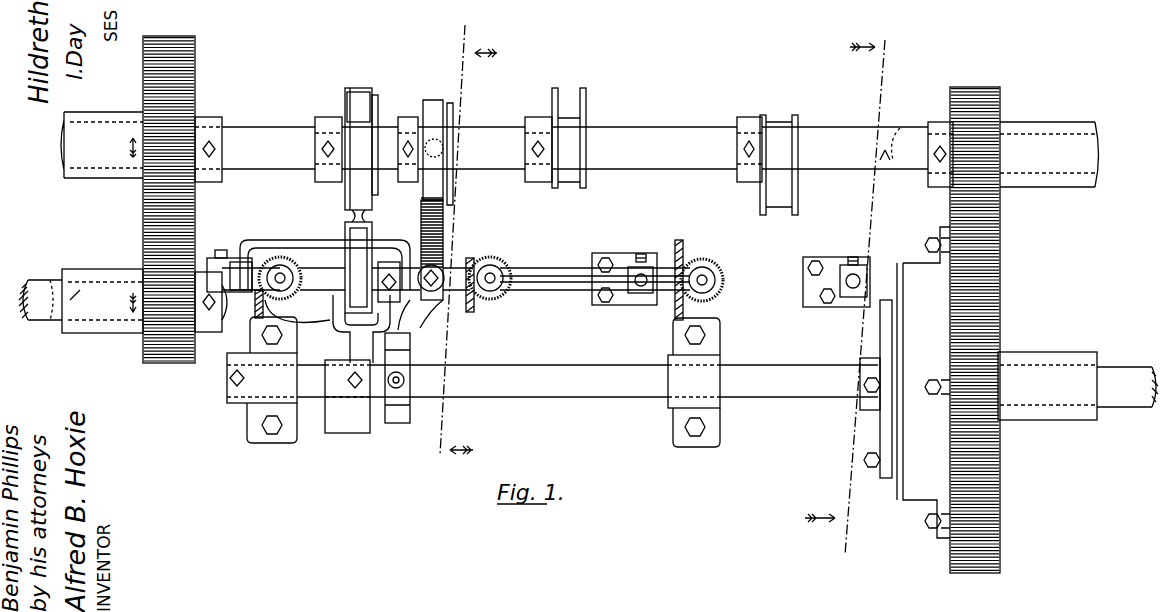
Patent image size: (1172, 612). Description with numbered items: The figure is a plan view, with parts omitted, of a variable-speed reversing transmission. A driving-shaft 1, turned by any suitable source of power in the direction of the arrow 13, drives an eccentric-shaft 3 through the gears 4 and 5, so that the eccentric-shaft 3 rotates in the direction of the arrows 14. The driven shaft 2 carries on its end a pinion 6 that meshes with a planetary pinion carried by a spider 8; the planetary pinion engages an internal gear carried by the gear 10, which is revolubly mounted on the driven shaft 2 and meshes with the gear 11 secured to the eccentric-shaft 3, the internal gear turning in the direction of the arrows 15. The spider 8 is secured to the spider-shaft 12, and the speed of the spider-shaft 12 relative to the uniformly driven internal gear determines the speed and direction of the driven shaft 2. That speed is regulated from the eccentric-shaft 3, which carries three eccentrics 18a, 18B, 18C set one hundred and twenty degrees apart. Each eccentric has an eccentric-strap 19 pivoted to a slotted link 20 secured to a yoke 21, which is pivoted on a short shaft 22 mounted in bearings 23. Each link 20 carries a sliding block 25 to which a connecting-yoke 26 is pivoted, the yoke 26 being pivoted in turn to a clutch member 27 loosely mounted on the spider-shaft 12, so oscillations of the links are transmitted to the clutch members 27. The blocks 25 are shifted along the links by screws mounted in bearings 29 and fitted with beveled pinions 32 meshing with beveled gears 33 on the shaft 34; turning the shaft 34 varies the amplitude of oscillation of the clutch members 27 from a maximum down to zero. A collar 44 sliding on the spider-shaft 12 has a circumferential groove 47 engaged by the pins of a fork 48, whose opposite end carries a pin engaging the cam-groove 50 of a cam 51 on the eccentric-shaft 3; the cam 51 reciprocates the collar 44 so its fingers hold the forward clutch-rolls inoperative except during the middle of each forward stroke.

The driving-shaft 1 is at (48, 318).
The driven shaft 2 is at (1114, 386).
The eccentric-shaft 3 is at (244, 134).
The gear 4 is at (155, 272).
The gear 5 is at (186, 92).
The pinion 6 is at (848, 298).
The spider 8 is at (885, 436).
The gear 10 is at (985, 272).
The gear 11 is at (986, 104).
The spider-shaft 12 is at (793, 388).
The arrow 13 is at (39, 292).
The arrows 14 is at (896, 128).
The arrows 15 is at (830, 396).
The eccentric 18a is at (357, 100).
The eccentric 18B is at (564, 104).
The eccentric 18C is at (776, 118).
The eccentric-strap 19 is at (344, 102).
The slotted link 20 is at (352, 262).
The yoke 21 is at (250, 240).
The short shaft 22 is at (238, 258).
The bearing 23 is at (212, 256).
The sliding block 25 is at (384, 262).
The connecting-yoke 26 is at (334, 322).
The clutch member 27 is at (345, 424).
The bearing 29 is at (280, 280).
The beveled pinion 32 is at (714, 260).
The beveled gear 33 is at (257, 306).
The shaft 34 is at (544, 278).
The collar 44 is at (398, 412).
The circumferential groove 47 is at (393, 420).
The fork 48 is at (444, 215).
The cam-groove 50 is at (436, 108).
The cam 51 is at (453, 122).